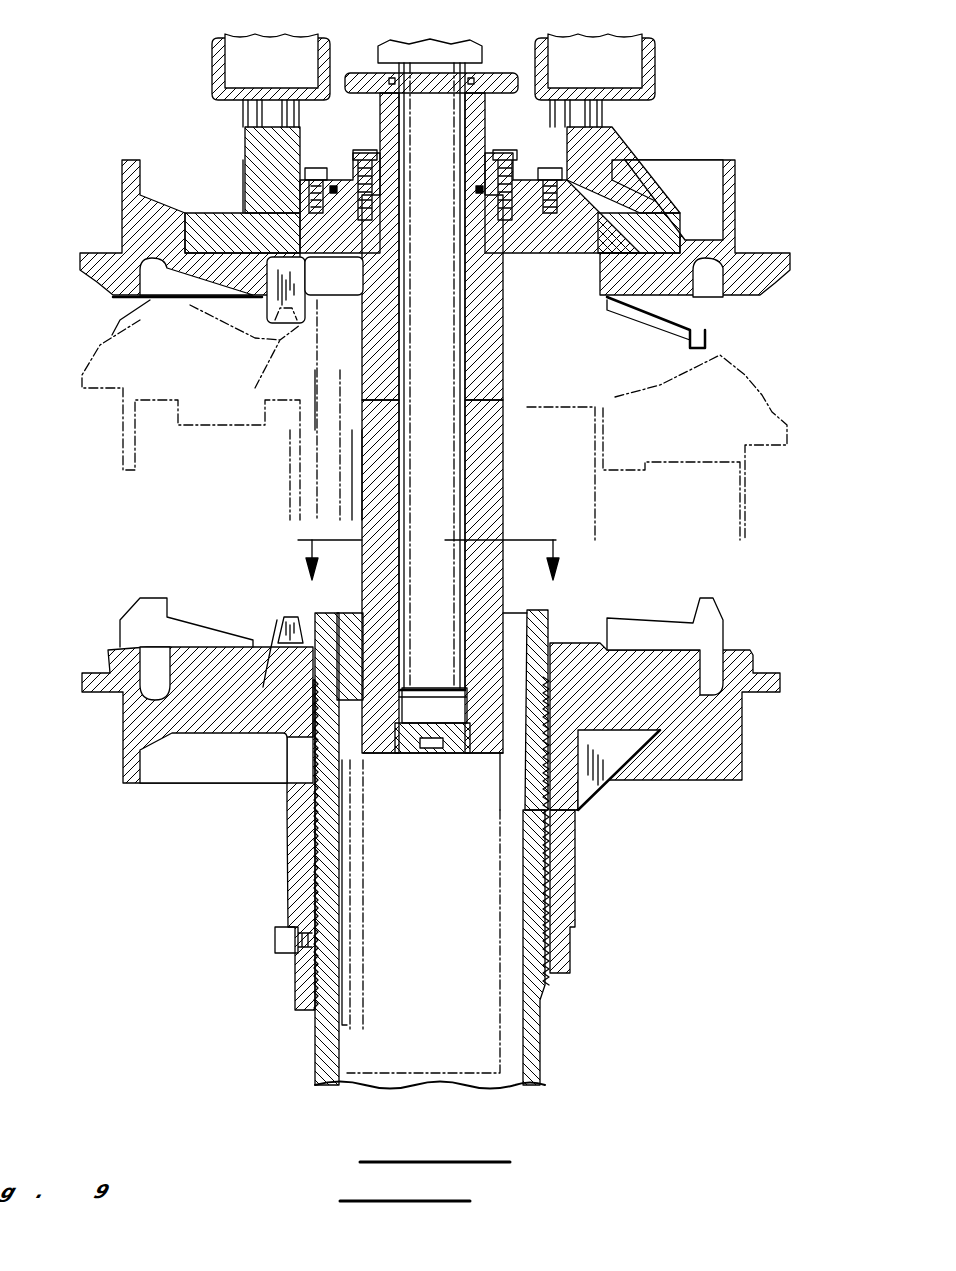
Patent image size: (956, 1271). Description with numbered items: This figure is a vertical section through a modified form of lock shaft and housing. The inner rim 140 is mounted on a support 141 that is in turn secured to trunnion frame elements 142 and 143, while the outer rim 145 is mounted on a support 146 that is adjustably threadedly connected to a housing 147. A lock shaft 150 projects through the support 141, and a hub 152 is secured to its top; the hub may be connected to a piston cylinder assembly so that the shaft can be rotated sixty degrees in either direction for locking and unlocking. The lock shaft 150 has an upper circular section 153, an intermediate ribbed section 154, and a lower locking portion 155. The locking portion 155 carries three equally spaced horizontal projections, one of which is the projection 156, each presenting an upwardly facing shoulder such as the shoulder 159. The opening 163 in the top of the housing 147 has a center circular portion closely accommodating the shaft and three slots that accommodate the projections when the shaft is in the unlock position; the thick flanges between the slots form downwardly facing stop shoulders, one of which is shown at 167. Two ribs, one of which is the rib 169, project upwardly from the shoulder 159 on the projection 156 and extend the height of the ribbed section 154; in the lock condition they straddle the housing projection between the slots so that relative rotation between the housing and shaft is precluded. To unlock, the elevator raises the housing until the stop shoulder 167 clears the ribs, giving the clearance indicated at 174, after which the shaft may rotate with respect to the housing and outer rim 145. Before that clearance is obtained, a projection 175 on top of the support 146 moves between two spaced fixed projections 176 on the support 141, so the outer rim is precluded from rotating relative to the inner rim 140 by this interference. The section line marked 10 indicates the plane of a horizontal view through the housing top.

The section line 10- 10 is at (415, 562).
The inner rim 140 is at (790, 260).
The support 141 is at (676, 212).
The trunnion frame element 142 is at (212, 56).
The trunnion frame element 143 is at (655, 52).
The outer rim 145 is at (782, 681).
The support 146 is at (655, 742).
The housing 147 is at (545, 1045).
The lock shaft 150 is at (505, 376).
The hub 152 is at (498, 73).
The upper circular section 153 is at (505, 330).
The intermediate ribbed section 154 is at (505, 482).
The lower locking portion 155 is at (507, 735).
The horizontal projection 156 is at (350, 685).
The upwardly facing shoulder 159 is at (398, 708).
The opening 163 is at (516, 612).
The stop shoulder 167 is at (372, 710).
The rib 169 is at (352, 596).
The clearance 174 is at (335, 406).
The projection 175 is at (281, 616).
The fixed projections 176 is at (310, 284).